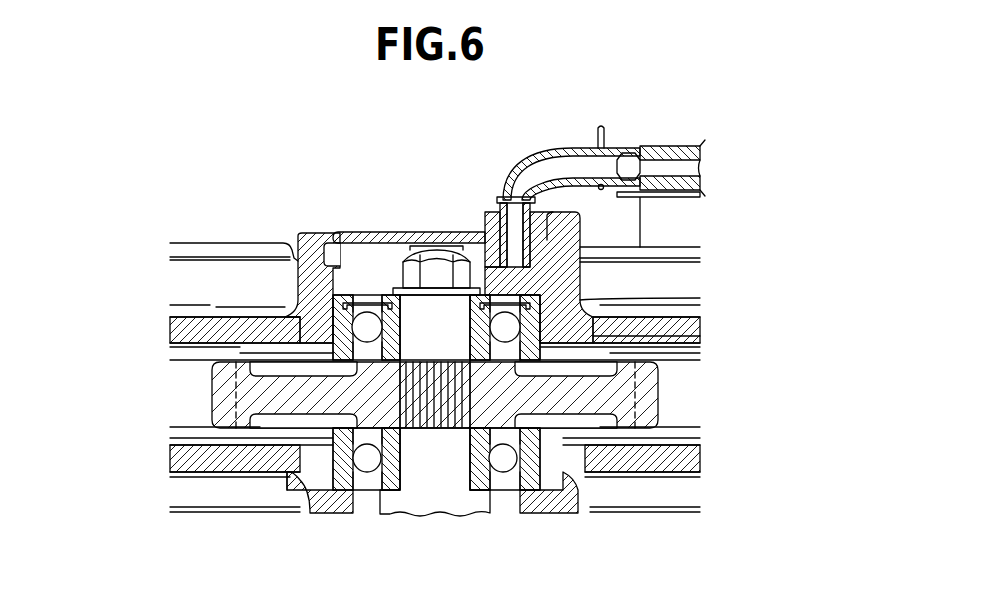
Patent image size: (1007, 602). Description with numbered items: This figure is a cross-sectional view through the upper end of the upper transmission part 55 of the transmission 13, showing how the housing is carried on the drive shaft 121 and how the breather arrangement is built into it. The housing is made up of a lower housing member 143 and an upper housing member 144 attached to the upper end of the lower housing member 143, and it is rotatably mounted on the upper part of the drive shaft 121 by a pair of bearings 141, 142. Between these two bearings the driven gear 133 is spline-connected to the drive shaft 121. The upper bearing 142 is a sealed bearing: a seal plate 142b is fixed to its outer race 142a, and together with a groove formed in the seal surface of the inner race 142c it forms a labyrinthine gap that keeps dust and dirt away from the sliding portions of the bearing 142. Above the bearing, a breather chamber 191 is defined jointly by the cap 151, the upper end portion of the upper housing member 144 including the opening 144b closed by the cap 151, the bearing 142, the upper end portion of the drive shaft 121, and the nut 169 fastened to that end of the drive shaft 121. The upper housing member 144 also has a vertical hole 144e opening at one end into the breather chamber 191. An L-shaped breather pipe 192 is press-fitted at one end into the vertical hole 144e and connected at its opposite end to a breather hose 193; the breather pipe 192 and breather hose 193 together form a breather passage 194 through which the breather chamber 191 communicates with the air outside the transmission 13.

The transmission 13 is at (240, 143).
The upper transmission part 55 is at (147, 283).
The drive shaft 121 is at (430, 473).
The driven gear 133 is at (214, 394).
The bearing 141 is at (337, 470).
The bearing 142 is at (368, 268).
The outer race 142a is at (690, 336).
The seal plate 142b is at (690, 301).
The inner race 142c is at (690, 271).
The lower housing member 143 is at (190, 458).
The upper housing member 144 is at (190, 320).
The opening 144b is at (370, 296).
The vertical hole 144e is at (512, 240).
The cap 151 is at (466, 238).
The nut 169 is at (433, 265).
The breather chamber 191 is at (357, 258).
The breather pipe 192 is at (560, 153).
The breather hose 193 is at (677, 150).
The breather passage 194 is at (707, 150).